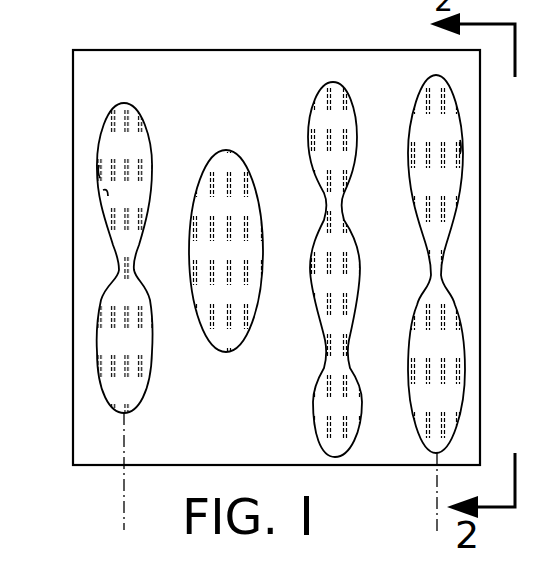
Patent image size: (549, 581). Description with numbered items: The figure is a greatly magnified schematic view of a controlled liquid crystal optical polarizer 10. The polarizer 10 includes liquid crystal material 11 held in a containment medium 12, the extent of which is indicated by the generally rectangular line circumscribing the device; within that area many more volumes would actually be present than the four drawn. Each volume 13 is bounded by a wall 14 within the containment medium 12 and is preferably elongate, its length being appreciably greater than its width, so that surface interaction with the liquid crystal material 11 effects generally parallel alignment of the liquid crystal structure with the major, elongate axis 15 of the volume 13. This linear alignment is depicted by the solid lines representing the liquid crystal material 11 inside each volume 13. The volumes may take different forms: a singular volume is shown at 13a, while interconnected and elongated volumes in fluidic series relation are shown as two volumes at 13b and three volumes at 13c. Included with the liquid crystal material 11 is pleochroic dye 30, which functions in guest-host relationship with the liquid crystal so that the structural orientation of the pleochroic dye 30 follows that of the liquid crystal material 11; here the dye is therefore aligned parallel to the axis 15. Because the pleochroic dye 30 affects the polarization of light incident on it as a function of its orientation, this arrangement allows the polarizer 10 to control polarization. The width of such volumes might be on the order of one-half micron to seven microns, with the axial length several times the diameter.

The controlled liquid crystal optical polarizer 10 is at (52, 110).
The liquid crystal material 11 is at (130, 123).
The containment medium 12 is at (143, 63).
The volume 13 is at (141, 148).
The singular volume 13a is at (243, 163).
The two interconnected elongate volumes 13b is at (150, 387).
The three interconnected elongate volumes 13c is at (318, 428).
The wall 14 is at (106, 195).
The elongate axis 15 is at (123, 503).
The pleochroic dye 30 is at (100, 172).